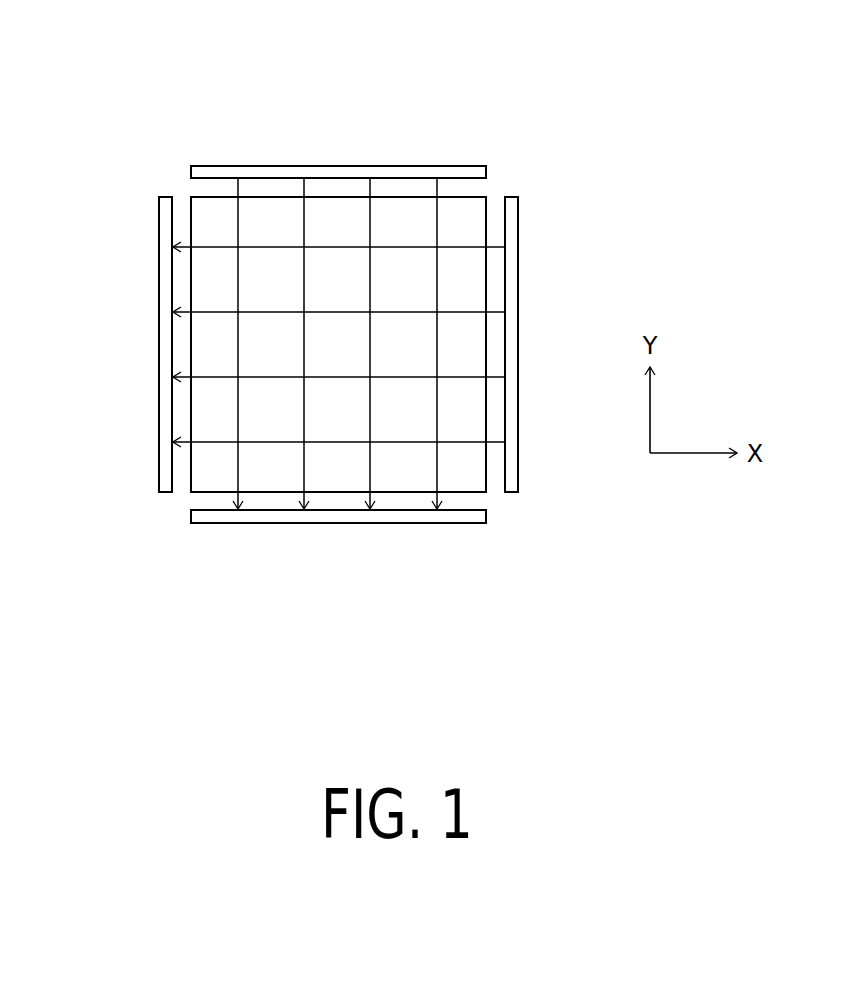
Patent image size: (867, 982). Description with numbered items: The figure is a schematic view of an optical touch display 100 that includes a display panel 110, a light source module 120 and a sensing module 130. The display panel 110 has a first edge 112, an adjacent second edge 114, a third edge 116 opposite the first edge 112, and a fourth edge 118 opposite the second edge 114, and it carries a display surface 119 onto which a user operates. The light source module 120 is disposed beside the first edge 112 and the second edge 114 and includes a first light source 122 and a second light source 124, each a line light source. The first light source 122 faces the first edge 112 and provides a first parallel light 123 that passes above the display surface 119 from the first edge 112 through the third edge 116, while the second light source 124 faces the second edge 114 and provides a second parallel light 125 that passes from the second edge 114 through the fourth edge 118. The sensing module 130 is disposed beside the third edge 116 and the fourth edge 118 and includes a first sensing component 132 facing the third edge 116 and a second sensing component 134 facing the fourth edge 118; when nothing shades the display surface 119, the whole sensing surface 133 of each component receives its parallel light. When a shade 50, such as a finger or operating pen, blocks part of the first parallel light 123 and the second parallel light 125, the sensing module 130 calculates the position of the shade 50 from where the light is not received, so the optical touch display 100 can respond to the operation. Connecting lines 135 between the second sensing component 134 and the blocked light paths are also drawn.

The optical touch display 100 is at (563, 657).
The display panel 110 is at (477, 482).
The first edge 112 is at (216, 194).
The second edge 114 is at (488, 230).
The third edge 116 is at (412, 495).
The fourth edge 118 is at (189, 223).
The display surface 119 is at (474, 464).
The shade 50 is at (302, 377).
The light source module 120 is at (433, 306).
The first light source 122 is at (487, 172).
The first parallel light 123 is at (238, 192).
The second light source 124 is at (517, 213).
The second parallel light 125 is at (497, 248).
The sensing module 130 is at (324, 408).
The first sensing component 132 is at (191, 517).
The sensing surface 133 is at (465, 507).
The second sensing component 134 is at (165, 491).
The fourth connecting lines 135 is at (174, 472).